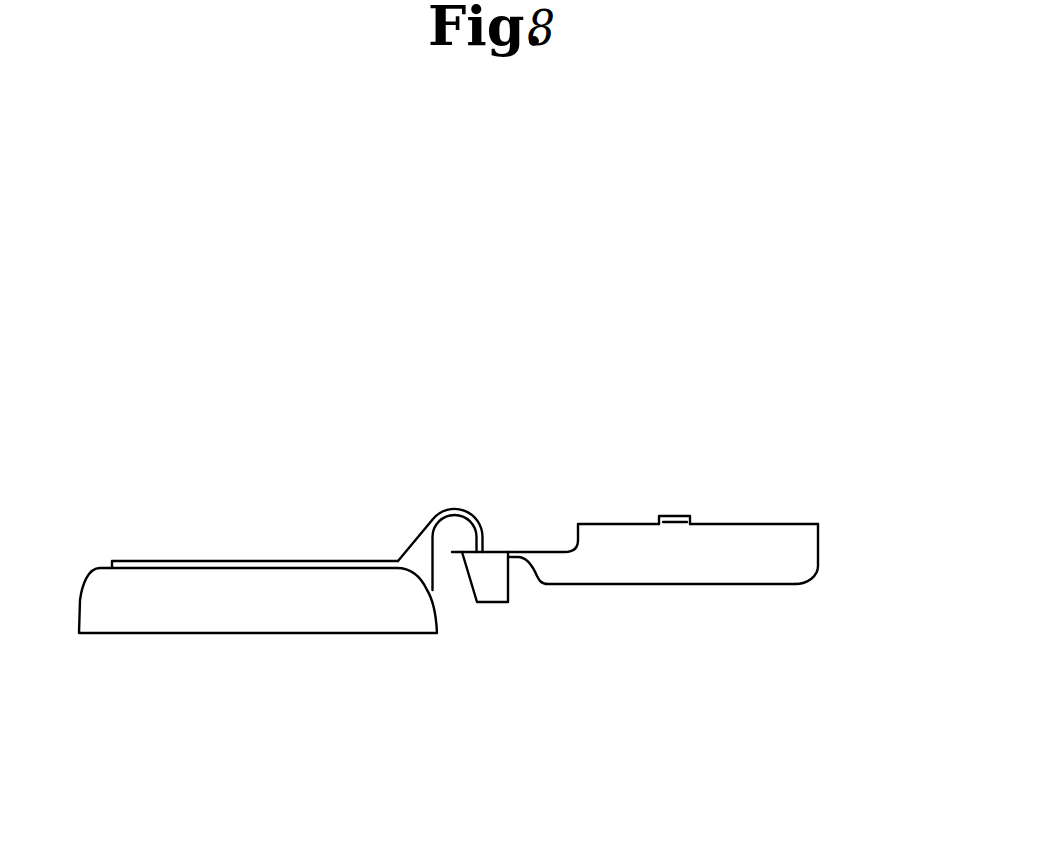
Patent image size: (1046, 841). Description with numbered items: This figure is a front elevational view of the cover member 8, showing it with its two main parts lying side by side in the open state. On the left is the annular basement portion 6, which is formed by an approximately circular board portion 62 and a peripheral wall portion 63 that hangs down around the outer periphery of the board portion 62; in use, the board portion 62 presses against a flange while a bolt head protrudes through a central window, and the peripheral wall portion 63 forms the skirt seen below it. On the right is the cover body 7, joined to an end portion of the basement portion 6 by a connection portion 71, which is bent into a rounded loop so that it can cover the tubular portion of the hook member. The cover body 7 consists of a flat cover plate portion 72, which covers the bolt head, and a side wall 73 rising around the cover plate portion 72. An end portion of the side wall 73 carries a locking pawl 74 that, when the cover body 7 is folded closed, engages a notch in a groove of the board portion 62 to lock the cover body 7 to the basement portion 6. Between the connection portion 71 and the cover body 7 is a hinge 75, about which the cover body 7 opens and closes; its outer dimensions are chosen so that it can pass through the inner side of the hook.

The cover member 8 is at (603, 377).
The basement portion 6 is at (263, 560).
The board portion 62 is at (180, 559).
The peripheral wall portion 63 is at (300, 607).
The cover body 7 is at (702, 584).
The connection portion 71 is at (460, 517).
The cover plate portion 72 is at (752, 585).
The side wall 73 is at (785, 552).
The locking pawl 74 is at (678, 514).
The hinge 75 is at (522, 552).